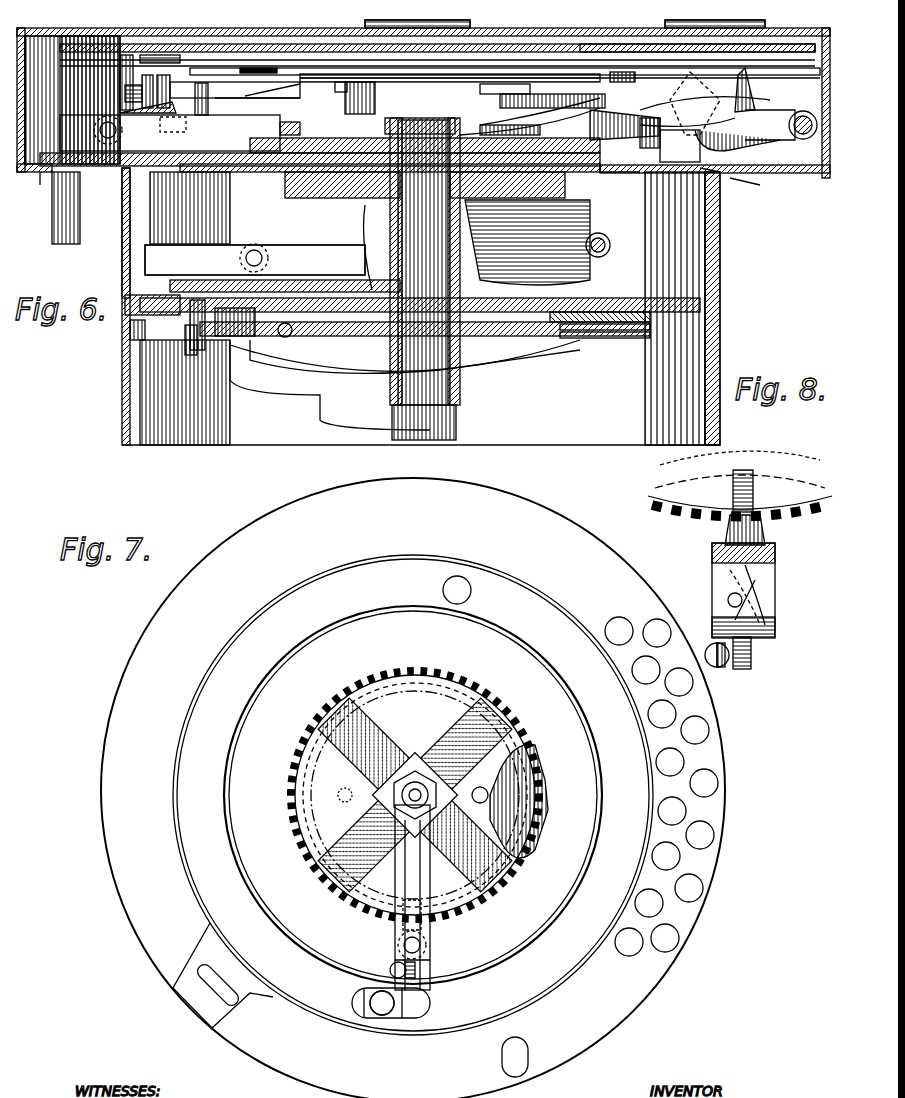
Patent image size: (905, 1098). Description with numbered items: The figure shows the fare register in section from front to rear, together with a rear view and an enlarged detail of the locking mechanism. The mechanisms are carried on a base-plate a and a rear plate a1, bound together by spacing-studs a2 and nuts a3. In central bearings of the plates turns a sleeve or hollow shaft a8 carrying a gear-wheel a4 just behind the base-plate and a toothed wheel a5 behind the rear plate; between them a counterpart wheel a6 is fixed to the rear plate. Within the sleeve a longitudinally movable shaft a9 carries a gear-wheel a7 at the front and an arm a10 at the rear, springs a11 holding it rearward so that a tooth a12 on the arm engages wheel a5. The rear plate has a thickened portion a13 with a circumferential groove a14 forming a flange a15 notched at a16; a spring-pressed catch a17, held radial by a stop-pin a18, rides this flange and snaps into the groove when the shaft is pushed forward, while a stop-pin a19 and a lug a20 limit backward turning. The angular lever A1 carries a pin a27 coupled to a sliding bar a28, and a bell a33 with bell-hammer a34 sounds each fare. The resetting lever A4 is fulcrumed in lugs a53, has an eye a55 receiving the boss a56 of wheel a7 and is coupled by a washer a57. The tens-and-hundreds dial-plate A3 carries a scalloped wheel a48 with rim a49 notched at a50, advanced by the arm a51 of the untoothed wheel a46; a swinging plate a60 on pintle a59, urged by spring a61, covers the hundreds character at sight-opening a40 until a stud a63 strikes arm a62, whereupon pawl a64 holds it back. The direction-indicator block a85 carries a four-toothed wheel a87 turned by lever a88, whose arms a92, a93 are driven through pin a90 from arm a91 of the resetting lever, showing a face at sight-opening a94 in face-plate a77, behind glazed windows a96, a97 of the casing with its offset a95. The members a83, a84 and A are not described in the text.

In FIG. 6, the swinging plate a60 is at (270, 60).
In FIG. 6, the face-plate a77 is at (555, 48).
In FIG. 6, the glazed aperture a96 is at (417, 14).
In FIG. 6, the glazed aperture a97 is at (715, 14).
In FIG. 6, the sight-opening a40 is at (480, 64).
In FIG. 6, the sight-opening a94 is at (760, 78).
In FIG. 6, the spring a61 is at (135, 84).
In FIG. 6, the stud or pintle a59 is at (175, 55).
In FIG. 6, the gear-wheel a7 is at (90, 100).
In FIG. 6, the pawl a64 is at (168, 108).
In FIG. 6, the upwardly-extending arm a62 is at (235, 84).
In FIG. 6, the block a83 is at (219, 99).
In FIG. 6, the stud or projection a63 is at (273, 98).
In FIG. 6, the scalloped wheel a48 is at (345, 100).
In FIG. 6, the notch a50 is at (332, 84).
In FIG. 6, the forwardly-extending rim a49 is at (372, 78).
In FIG. 6, the radially-projecting arm a51 is at (514, 82).
In FIG. 6, the plain or untoothed wheel a46 is at (552, 89).
In FIG. 6, the dial-plate A3 is at (622, 68).
In FIG. 6, the plate or washer a57 is at (530, 115).
In FIG. 6, the lever A4 is at (603, 122).
In FIG. 6, the eye or opening a55 is at (330, 133).
In FIG. 6, the hub or boss a56 is at (385, 128).
In FIG. 6, the four-toothed wheel a87 is at (695, 94).
In FIG. 6, the four-sided block a85 is at (705, 88).
In FIG. 6, the arm a92 is at (755, 85).
In FIG. 6, the arm a91 is at (687, 109).
In FIG. 6, the swinging or vibrating lever a88 is at (781, 122).
In FIG. 6, the laterally-projecting pin a90 is at (737, 142).
In FIG. 6, the ears or lugs a53 is at (654, 133).
In FIG. 6, the nuts a3 is at (677, 146).
In FIG. 6, the gear-wheel a4 is at (285, 185).
In FIG. 6, the post a84 is at (62, 208).
In FIG. 6, the square shoulder or offset a95 is at (410, 182).
In FIG. 7, the square shoulder or offset a95 is at (646, 814).
In FIG. 6, the spacing-studs a2 is at (140, 205).
In FIG. 6, the casing A is at (736, 308).
In FIG. 7, the casing A is at (403, 788).
In FIG. 6, the shaft a9 is at (398, 228).
In FIG. 7, the shaft a9 is at (415, 770).
In FIG. 6, the sleeve or hollow shaft a8 is at (365, 210).
In FIG. 6, the bell a33 is at (543, 240).
In FIG. 6, the bell-hammer a34 is at (612, 239).
In FIG. 6, the base-plate a is at (618, 178).
In FIG. 6, the arm a93 is at (710, 174).
In FIG. 6, the thickened portion a13 is at (560, 298).
In FIG. 6, the rear plate a1 is at (610, 296).
In FIG. 7, the rear plate a1 is at (413, 795).
In FIG. 6, the circumferential groove or channel a14 is at (600, 306).
In FIG. 6, the flange a15 is at (300, 296).
In FIG. 7, the flange a15 is at (548, 795).
In FIG. 6, the wheel a6 is at (605, 319).
In FIG. 6, the toothed wheel a5 is at (605, 331).
In FIG. 8, the toothed wheel a5 is at (660, 508).
In FIG. 7, the toothed wheel a5 is at (298, 768).
In FIG. 6, the angular lever A1 is at (267, 258).
In FIG. 7, the angular lever A1 is at (352, 998).
In FIG. 6, the stop-pin a19 is at (195, 300).
In FIG. 8, the stop-pin a19 is at (722, 668).
In FIG. 7, the stop-pin a19 is at (390, 968).
In FIG. 6, the swinging spring-pressed catch a17 is at (240, 308).
In FIG. 8, the swinging spring-pressed catch a17 is at (765, 612).
In FIG. 7, the swinging spring-pressed catch a17 is at (430, 950).
In FIG. 6, the sliding bar a28 is at (125, 298).
In FIG. 6, the rearwardly-projecting pin or stud a27 is at (135, 328).
In FIG. 7, the rearwardly-projecting pin or stud a27 is at (382, 1015).
In FIG. 6, the forwardly-projecting lug a20 is at (185, 332).
In FIG. 8, the forwardly-projecting lug a20 is at (751, 655).
In FIG. 7, the forwardly-projecting lug a20 is at (415, 970).
In FIG. 6, the stop-pin a18 is at (270, 340).
In FIG. 8, the stop-pin a18 is at (728, 602).
In FIG. 6, the stud or tooth a12 is at (415, 360).
In FIG. 8, the stud or tooth a12 is at (765, 532).
In FIG. 6, the springs a11 is at (540, 352).
In FIG. 7, the springs a11 is at (414, 794).
In FIG. 6, the arm a10 is at (330, 420).
In FIG. 8, the arm a10 is at (775, 568).
In FIG. 7, the arm a10 is at (395, 880).
In FIG. 8, the notch a16 is at (750, 480).
In FIG. 7, the notch a16 is at (425, 915).